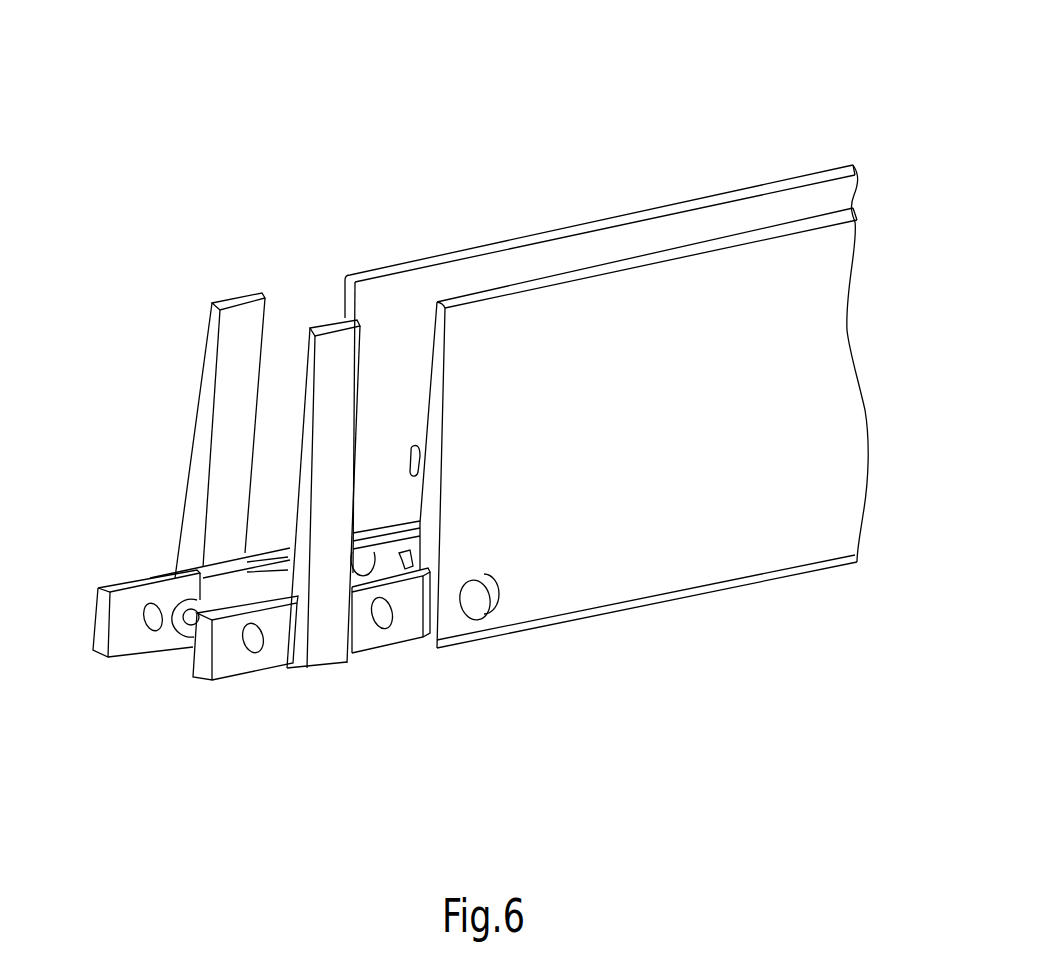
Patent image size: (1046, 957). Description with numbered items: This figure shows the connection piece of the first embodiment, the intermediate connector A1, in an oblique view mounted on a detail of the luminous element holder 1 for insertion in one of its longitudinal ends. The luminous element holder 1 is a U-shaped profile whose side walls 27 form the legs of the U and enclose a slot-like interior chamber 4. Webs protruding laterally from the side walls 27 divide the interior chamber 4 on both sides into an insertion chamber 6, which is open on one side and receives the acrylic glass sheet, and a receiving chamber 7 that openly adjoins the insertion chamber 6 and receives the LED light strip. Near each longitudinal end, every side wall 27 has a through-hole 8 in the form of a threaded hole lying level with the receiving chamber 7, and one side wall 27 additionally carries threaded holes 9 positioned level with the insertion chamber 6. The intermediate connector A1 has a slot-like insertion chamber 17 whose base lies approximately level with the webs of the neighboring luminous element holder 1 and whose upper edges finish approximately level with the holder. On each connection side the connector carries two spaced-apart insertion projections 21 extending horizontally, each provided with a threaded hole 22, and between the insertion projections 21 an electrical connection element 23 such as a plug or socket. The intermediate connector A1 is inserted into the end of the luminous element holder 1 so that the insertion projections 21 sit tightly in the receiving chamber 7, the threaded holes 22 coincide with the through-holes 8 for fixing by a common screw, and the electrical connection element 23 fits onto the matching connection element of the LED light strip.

The luminous element holder 1 is at (699, 105).
The interior chamber 4 is at (382, 300).
The insertion chamber 6 is at (397, 300).
The receiving chamber 7 is at (390, 565).
The through-hole 8 is at (367, 540).
The threaded hole 9 is at (412, 443).
The insertion chamber 17 is at (295, 310).
The insertion projection 21 is at (120, 623).
The threaded hole 22 is at (158, 632).
The electrical connection element 23 is at (223, 593).
The side wall 27 is at (585, 313).
The intermediate connector A1 is at (235, 245).